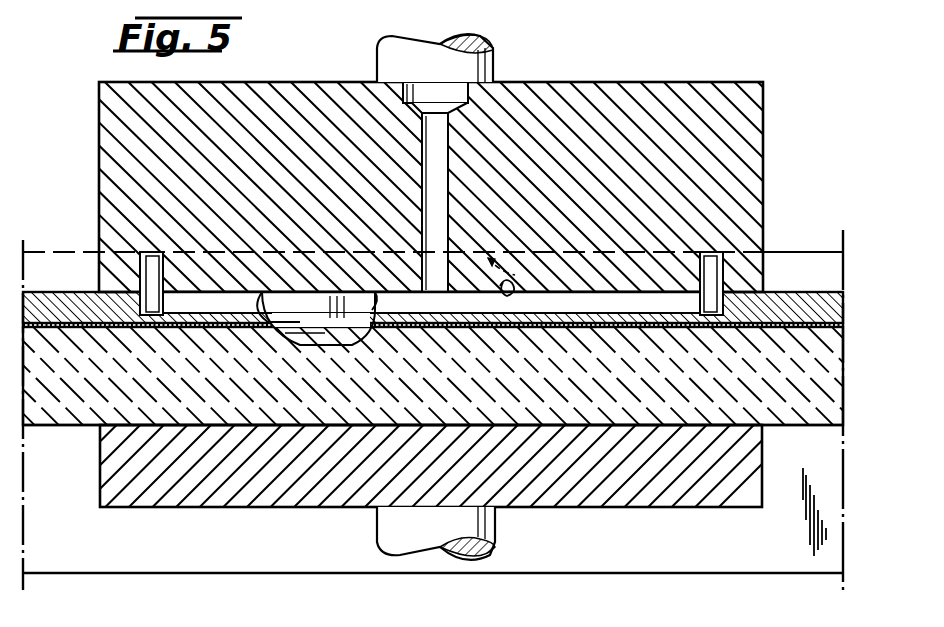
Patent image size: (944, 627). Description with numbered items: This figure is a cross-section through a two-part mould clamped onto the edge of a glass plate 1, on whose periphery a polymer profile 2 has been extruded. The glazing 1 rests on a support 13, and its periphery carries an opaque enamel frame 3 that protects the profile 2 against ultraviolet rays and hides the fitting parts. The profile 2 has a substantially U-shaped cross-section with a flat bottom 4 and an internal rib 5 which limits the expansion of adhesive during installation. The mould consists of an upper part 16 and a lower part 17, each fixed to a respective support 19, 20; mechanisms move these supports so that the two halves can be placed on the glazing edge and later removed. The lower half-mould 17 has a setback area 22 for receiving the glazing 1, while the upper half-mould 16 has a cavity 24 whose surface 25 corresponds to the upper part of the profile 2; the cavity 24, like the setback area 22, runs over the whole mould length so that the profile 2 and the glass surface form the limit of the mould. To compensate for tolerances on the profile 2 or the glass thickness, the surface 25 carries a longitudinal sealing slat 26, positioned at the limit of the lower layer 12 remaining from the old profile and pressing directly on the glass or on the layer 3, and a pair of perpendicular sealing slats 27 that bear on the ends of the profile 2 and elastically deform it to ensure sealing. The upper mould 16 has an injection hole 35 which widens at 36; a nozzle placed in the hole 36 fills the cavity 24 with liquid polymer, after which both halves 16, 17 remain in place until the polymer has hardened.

The glass plate 1 is at (78, 420).
The profile 2 is at (786, 250).
The frame 3 is at (822, 290).
The flat bottom 4 is at (74, 328).
The internal rib 5 is at (58, 268).
The lower layer 12 is at (262, 305).
The support 13 is at (100, 560).
The upper part of the mould 16 is at (96, 125).
The lower part of the mould 17 is at (100, 488).
The support 19 is at (488, 66).
The support 20 is at (488, 527).
The setback area 22 is at (243, 422).
The cavity 24 is at (372, 305).
The surface 25 is at (512, 290).
The longitudinal sealing slat 26 is at (305, 350).
The perpendicular sealing slats 27 is at (150, 252).
The injection hole 35 is at (438, 165).
The widened part of the injection hole 36 is at (426, 90).